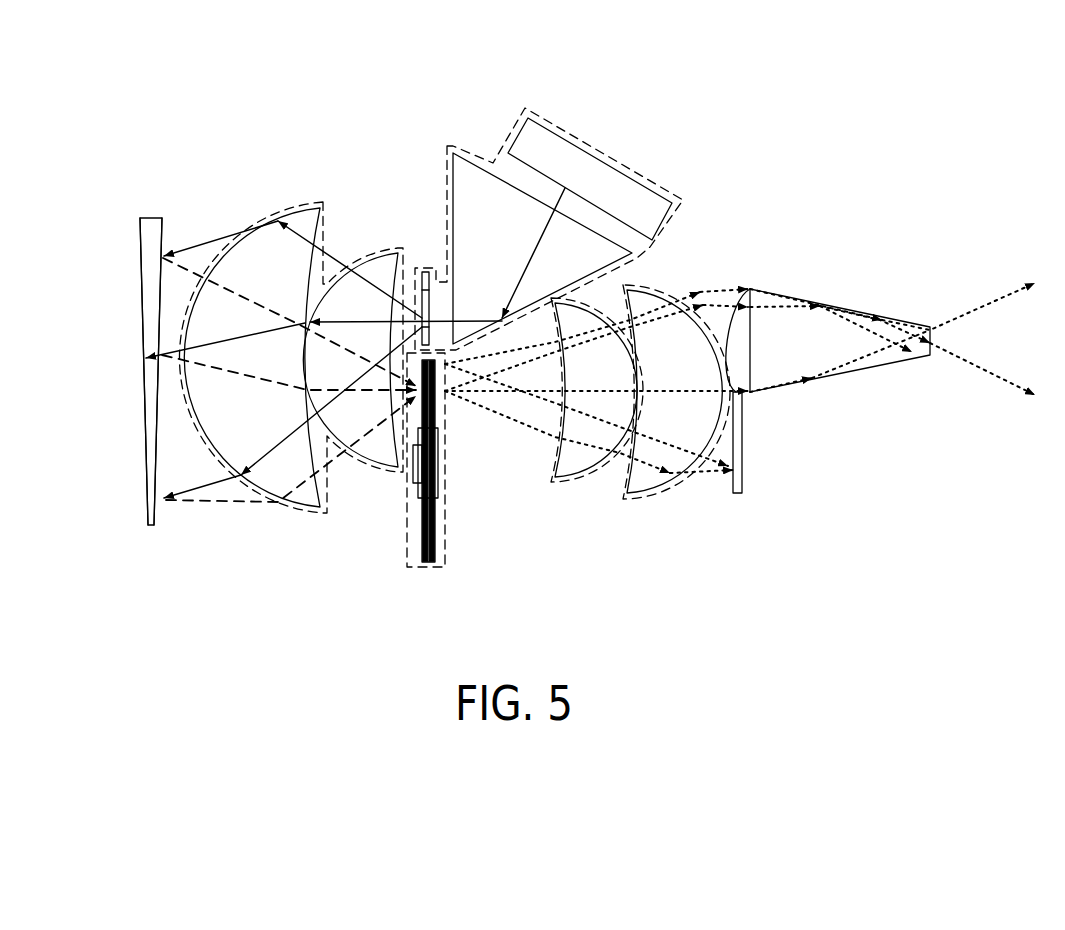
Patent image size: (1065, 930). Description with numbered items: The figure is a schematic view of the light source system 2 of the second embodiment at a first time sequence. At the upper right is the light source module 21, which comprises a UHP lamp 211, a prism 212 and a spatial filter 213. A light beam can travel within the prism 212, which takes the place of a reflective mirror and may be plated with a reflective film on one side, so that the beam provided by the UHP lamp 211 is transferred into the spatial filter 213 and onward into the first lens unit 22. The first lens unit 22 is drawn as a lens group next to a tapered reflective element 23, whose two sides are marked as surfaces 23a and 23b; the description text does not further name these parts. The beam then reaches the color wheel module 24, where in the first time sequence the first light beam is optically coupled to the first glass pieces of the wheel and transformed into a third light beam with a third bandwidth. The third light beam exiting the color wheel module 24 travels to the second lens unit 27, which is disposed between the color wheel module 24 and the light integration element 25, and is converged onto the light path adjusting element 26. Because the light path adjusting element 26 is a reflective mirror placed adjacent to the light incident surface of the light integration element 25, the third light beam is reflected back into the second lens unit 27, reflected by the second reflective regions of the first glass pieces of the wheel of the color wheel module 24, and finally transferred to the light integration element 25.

The light source system 2 is at (250, 47).
The light source module 21 is at (620, 155).
The UHP lamp 211 is at (557, 128).
The prism 212 is at (458, 150).
The spatial filter 213 is at (428, 267).
The first lens unit 22 is at (302, 200).
The reflective element 23 is at (148, 217).
The first surface 23a is at (184, 237).
The second surface 23b is at (118, 237).
The color wheel module 24 is at (435, 568).
The light integration element 25 is at (866, 310).
The light path adjusting element 26 is at (743, 470).
The second lens unit 27 is at (653, 500).